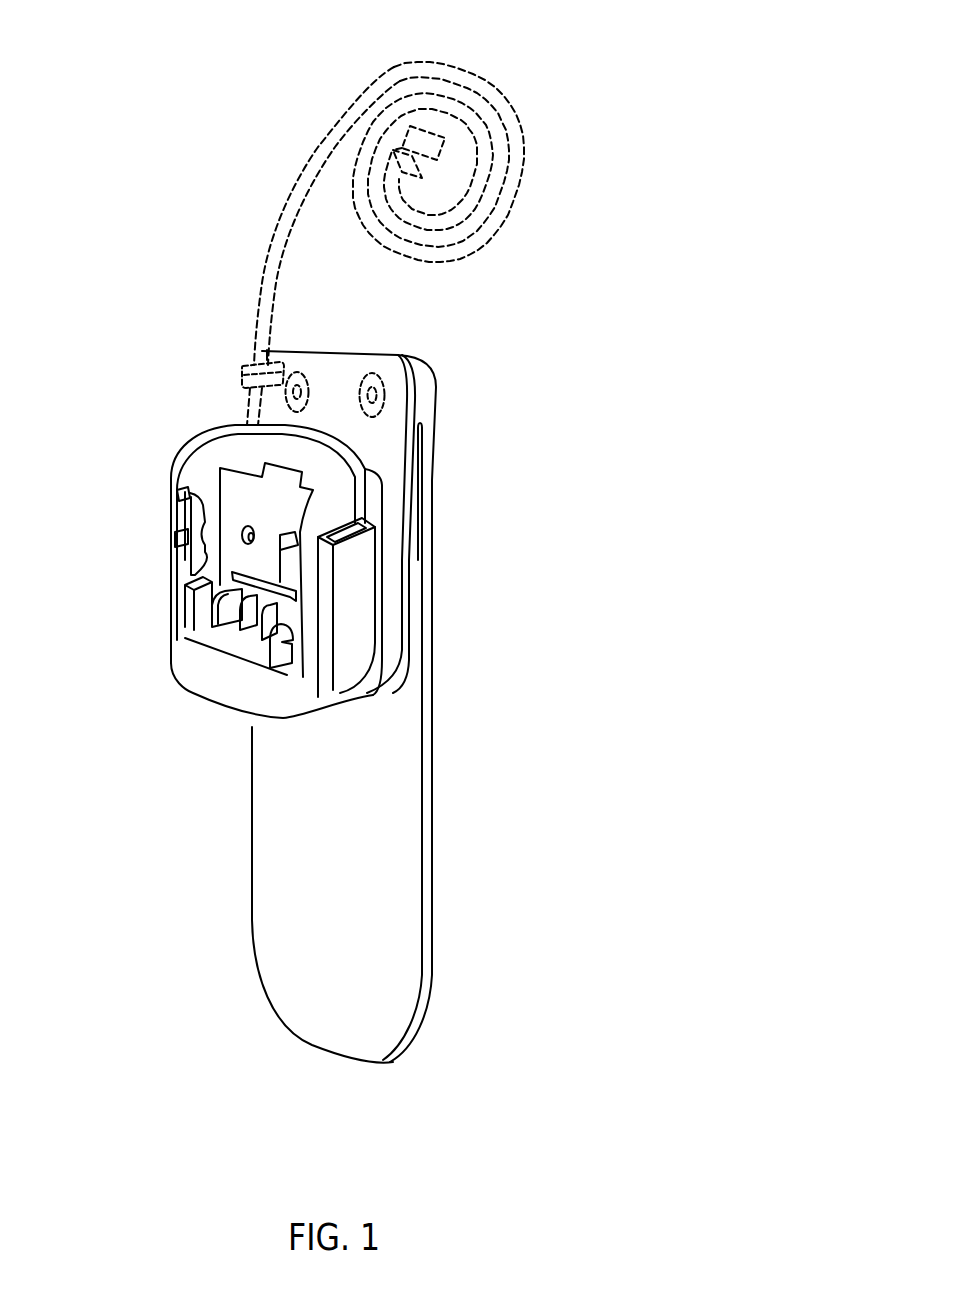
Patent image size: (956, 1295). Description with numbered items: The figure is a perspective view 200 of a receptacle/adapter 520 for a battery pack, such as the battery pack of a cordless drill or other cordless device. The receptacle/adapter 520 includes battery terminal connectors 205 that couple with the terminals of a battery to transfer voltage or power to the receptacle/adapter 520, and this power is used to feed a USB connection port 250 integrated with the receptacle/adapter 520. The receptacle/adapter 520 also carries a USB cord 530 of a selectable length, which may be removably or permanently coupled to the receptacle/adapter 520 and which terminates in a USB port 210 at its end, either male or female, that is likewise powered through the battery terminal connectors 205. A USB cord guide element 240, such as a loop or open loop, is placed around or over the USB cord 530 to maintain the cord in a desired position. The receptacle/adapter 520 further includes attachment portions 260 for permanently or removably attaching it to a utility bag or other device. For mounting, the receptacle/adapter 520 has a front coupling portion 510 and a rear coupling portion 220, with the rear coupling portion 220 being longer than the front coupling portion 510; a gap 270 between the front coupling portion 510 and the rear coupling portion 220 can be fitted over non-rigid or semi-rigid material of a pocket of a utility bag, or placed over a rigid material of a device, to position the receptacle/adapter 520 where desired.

The perspective view 200 is at (690, 227).
The battery terminal connectors 205 is at (230, 612).
The USB port 210 is at (440, 152).
The rear coupling portion 220 is at (407, 709).
The USB cord guide element 240 is at (240, 370).
The USB connection port 250 is at (353, 578).
The attachment portions 260 is at (380, 392).
The gap 270 is at (418, 628).
The front coupling portion 510 is at (388, 447).
The receptacle/adapter 520 is at (172, 520).
The USB cord 530 is at (488, 70).